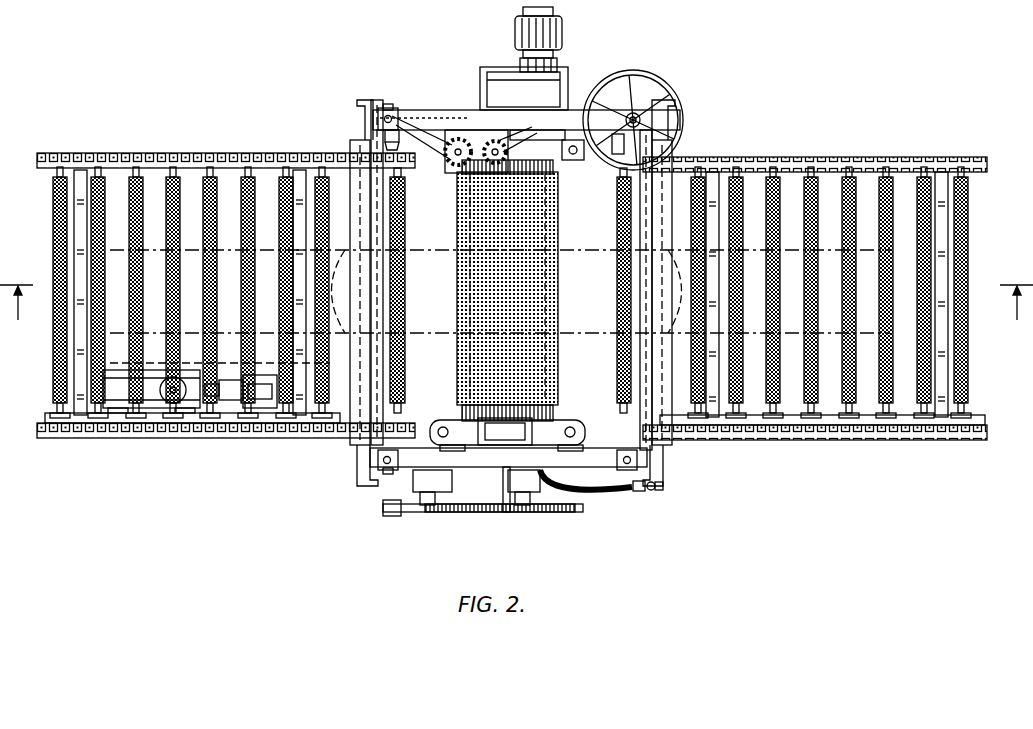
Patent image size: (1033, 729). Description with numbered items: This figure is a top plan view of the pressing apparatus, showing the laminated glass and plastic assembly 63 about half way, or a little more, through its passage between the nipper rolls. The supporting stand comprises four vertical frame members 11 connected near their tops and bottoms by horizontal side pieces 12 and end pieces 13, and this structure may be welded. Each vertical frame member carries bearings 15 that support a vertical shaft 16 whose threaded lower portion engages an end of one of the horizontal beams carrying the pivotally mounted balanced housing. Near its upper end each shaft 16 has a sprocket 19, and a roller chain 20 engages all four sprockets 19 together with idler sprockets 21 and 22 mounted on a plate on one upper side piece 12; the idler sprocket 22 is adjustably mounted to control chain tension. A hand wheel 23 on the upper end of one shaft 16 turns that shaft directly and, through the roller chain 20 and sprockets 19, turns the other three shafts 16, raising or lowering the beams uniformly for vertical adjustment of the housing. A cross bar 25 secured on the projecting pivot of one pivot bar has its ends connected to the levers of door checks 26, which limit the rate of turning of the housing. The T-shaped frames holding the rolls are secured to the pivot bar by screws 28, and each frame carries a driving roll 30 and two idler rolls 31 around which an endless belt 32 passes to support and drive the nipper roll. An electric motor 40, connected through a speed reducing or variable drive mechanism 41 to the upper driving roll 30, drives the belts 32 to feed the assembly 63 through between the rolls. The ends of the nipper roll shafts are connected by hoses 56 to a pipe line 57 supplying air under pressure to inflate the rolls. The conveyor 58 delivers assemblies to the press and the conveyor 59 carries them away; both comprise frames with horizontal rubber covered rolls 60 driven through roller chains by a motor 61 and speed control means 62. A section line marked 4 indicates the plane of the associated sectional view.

The section line 4- 4 is at (516, 309).
The vertical frame members 11 is at (364, 100).
The horizontal side pieces 12 is at (432, 110).
The end pieces 13 is at (355, 190).
The bearings 15 is at (383, 106).
The vertical shaft 16 is at (388, 108).
The sprocket 19 is at (396, 128).
The roller chain 20 is at (423, 148).
The idler sprocket 21 is at (464, 134).
The idler sprocket 22 is at (455, 138).
The hand wheel 23 is at (628, 76).
The cross bar 25 is at (475, 513).
The door checks 26 is at (450, 486).
The screws 28 is at (573, 160).
The driving roll 30 is at (472, 190).
The idler rolls 31 is at (458, 396).
The endless belt 32 is at (558, 233).
The electric motor 40 is at (563, 31).
The speed reducing or variable drive mechanism 41 is at (494, 74).
The hoses 56 is at (605, 489).
The pipe line 57 is at (658, 486).
The conveyor 58 is at (822, 156).
The conveyor 59 is at (185, 150).
The rubber covered rolls 60 is at (53, 234).
The motor 61 is at (157, 406).
The speed control means 62 is at (263, 400).
The laminated glass and plastic assembly 63 is at (425, 337).